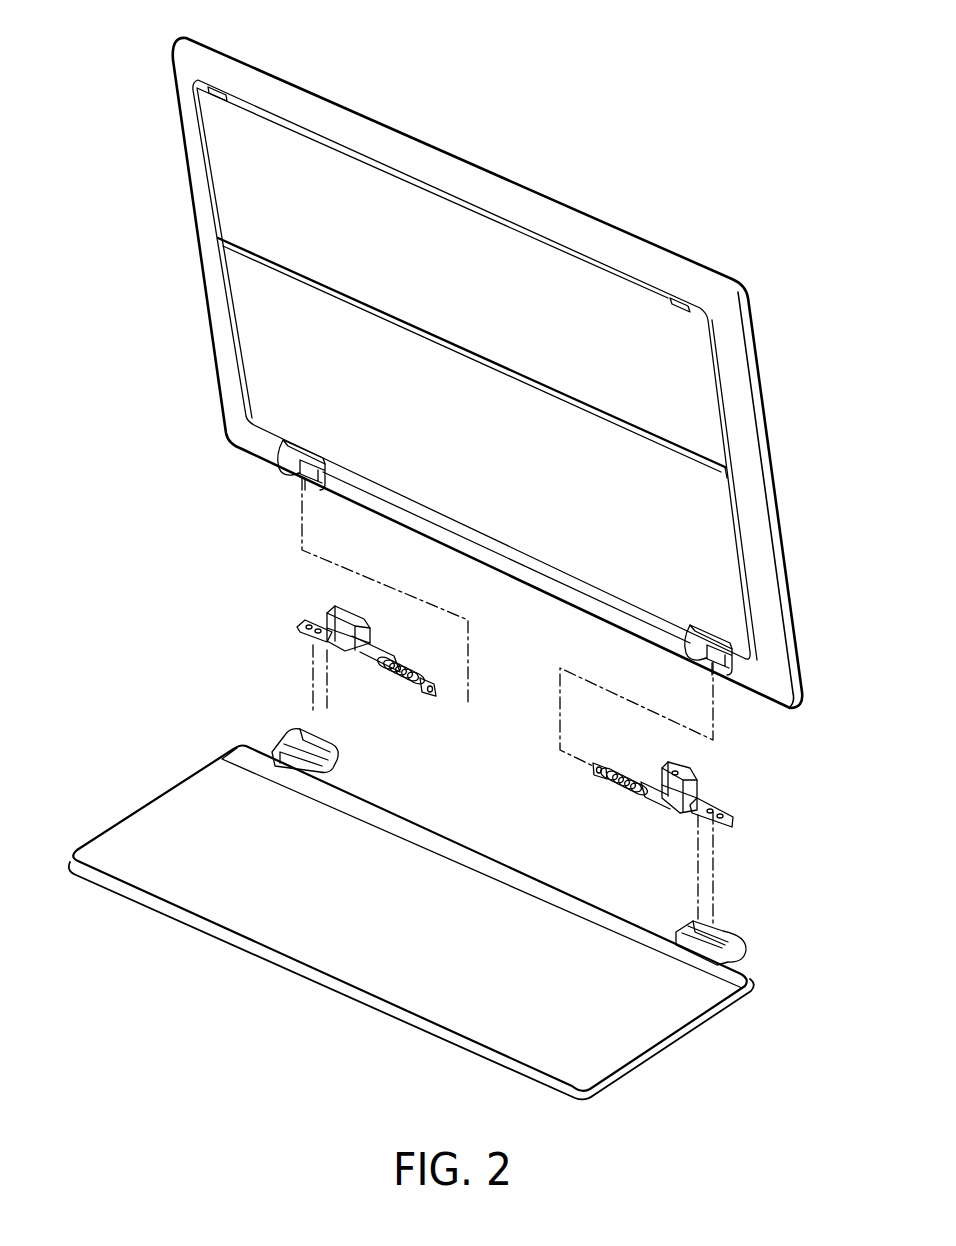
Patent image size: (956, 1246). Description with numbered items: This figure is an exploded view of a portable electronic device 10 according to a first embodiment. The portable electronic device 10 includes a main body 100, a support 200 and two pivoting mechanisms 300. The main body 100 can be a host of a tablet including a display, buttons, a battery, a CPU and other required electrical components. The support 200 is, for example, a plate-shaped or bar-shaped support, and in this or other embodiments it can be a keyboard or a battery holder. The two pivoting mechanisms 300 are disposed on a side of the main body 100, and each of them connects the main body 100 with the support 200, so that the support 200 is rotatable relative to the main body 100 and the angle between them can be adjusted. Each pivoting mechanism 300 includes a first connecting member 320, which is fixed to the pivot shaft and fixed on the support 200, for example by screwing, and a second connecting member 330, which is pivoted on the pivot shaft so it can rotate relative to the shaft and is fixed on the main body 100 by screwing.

The portable electronic device 10 is at (661, 61).
The main body 100 is at (466, 186).
The support 200 is at (605, 1033).
The pivoting mechanism 300 is at (306, 613).
The first connecting member 320 is at (722, 818).
The second connecting member 330 is at (698, 779).